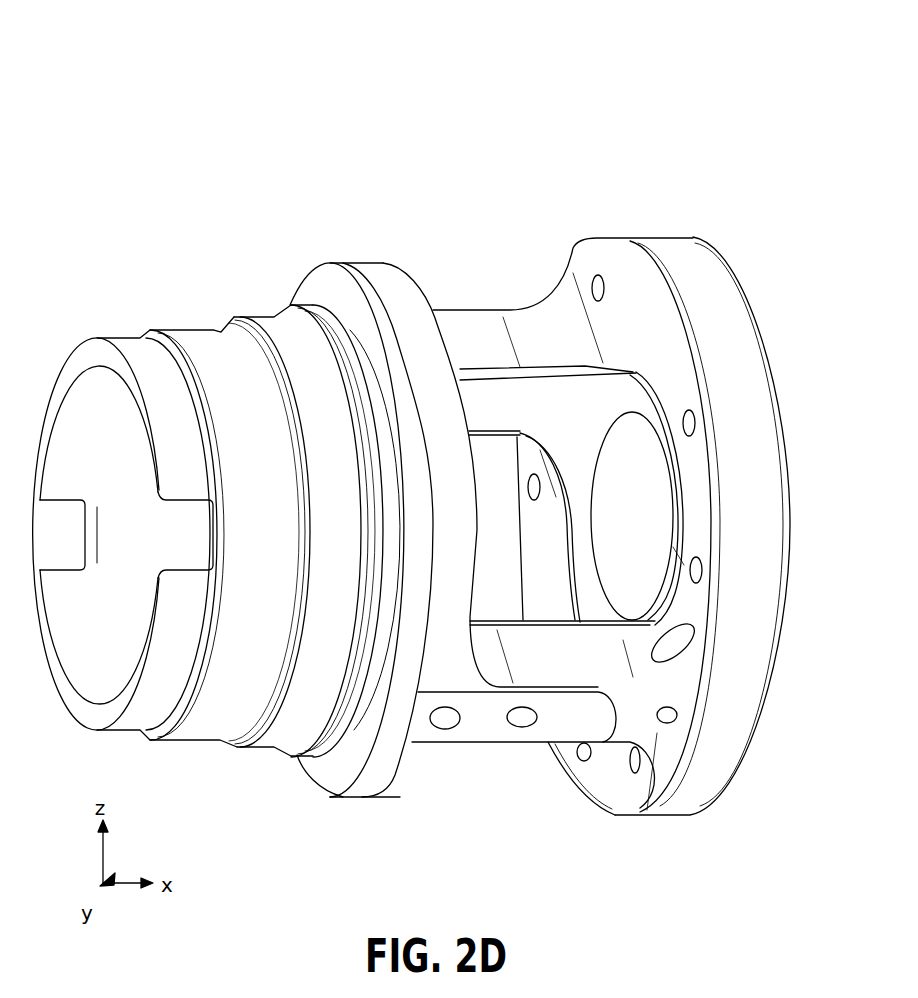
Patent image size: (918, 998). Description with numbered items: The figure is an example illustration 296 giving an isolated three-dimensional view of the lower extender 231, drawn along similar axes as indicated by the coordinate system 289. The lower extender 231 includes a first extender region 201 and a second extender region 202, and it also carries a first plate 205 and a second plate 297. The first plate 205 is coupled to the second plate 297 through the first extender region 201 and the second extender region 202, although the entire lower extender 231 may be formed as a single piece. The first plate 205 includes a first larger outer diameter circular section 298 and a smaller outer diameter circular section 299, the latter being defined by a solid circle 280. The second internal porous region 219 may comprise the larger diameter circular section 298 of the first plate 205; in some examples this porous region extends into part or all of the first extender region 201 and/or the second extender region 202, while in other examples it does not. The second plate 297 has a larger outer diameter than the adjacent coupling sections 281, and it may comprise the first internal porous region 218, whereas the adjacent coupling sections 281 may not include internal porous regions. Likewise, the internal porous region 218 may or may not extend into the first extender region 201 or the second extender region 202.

The first extender region 201 is at (475, 326).
The second extender region 202 is at (552, 725).
The first plate 205 is at (760, 424).
The first internal porous region 218 is at (383, 744).
The second internal porous region 219 is at (688, 464).
The lower extender 231 is at (488, 184).
The solid circle 280 is at (612, 419).
The adjacent coupling sections 281 is at (197, 343).
The coordinate system 289 is at (160, 849).
The example illustration 296 is at (773, 96).
The second plate 297 is at (348, 768).
The first larger outer diameter circular section 298 is at (623, 263).
The smaller outer diameter circular section 299 is at (615, 517).